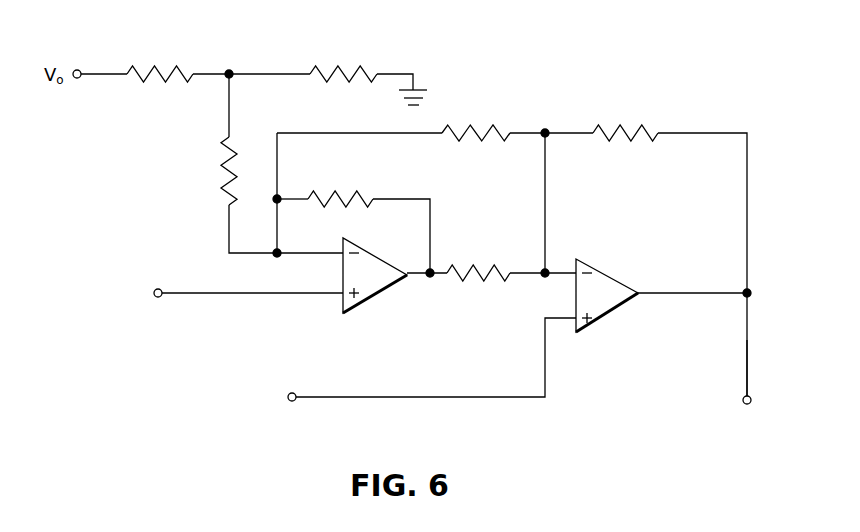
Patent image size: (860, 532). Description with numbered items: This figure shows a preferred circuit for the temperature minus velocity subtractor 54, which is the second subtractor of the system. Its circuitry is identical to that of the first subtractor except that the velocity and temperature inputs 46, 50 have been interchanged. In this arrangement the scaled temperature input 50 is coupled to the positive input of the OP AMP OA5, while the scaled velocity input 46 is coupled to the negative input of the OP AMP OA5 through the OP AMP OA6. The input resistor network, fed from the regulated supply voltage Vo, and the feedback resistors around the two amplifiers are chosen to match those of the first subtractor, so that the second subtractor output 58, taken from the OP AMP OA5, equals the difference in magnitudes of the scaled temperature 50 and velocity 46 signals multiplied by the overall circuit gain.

The scaled velocity input 46 is at (172, 293).
The scaled temperature input 50 is at (309, 397).
The temperature minus velocity subtractor 54 is at (578, 74).
The second subtractor output 58 is at (747, 388).
The OP AMP OA6 is at (389, 294).
The OP AMP OA5 is at (609, 320).